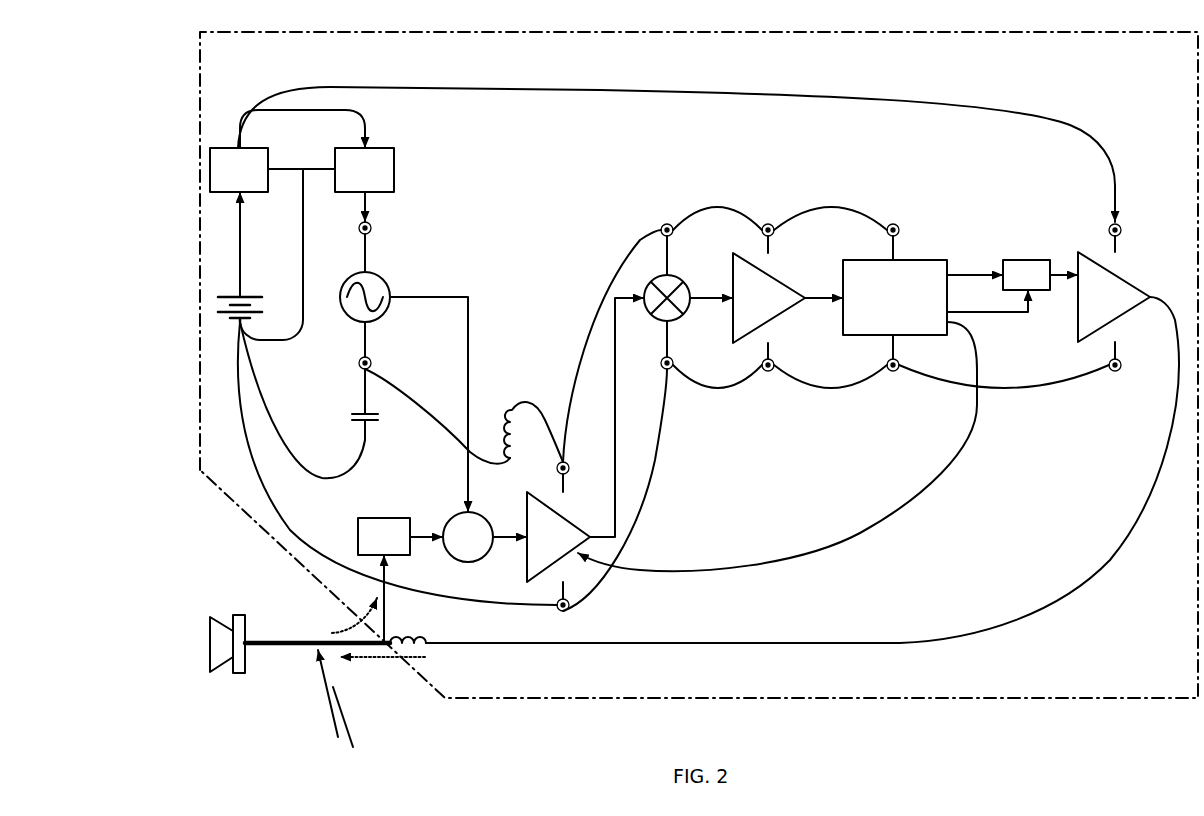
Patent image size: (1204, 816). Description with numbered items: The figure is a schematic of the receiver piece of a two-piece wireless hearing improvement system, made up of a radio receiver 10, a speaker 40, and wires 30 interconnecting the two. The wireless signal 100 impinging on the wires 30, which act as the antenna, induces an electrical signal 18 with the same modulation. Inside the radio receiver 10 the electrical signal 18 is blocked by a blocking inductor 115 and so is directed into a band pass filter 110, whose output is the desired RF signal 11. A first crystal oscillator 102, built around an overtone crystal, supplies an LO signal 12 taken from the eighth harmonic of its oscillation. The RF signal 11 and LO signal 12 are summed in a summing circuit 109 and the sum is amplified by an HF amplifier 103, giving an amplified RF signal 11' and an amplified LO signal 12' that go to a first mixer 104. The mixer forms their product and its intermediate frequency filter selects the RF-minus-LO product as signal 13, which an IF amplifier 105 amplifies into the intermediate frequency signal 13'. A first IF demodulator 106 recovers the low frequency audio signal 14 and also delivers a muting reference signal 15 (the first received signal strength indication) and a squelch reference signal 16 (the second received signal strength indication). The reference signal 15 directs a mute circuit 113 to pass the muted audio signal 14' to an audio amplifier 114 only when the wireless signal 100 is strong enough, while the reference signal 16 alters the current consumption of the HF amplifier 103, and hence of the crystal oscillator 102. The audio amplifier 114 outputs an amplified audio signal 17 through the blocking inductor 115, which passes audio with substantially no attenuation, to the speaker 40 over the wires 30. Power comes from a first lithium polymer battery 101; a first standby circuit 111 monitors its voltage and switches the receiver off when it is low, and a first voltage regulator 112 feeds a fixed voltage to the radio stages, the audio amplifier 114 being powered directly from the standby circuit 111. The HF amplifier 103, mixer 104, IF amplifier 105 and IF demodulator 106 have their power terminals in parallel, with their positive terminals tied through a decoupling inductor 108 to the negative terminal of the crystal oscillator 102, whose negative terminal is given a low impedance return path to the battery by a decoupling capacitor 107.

The radio receiver 10 is at (1090, 708).
The RF signal 11 is at (410, 482).
The amplified RF signal 11' is at (698, 417).
The LO signal 12 is at (437, 404).
The amplified LO signal 12' is at (709, 483).
The (RF-LO) frequency signal 13 is at (696, 199).
The intermediate frequency signal 13' is at (815, 213).
The audio signal 14 is at (982, 156).
The muted audio signal 14' is at (1073, 156).
The muting reference signal (RSSI 1) 15 is at (1018, 318).
The squelch reference signal (RSSI 2) 16 is at (917, 507).
The amplified audio signal 17 is at (377, 663).
The electrical signal 18 is at (348, 627).
The wires 30 is at (277, 652).
The speaker 40 is at (230, 673).
The wireless signal 100 is at (355, 730).
The first lithium polymer battery 101 is at (257, 322).
The first crystal oscillator 102 is at (385, 272).
The HF amplifier 103 is at (573, 563).
The first mixer 104 is at (648, 270).
The IF amplifier 105 is at (793, 313).
The first IF demodulator 106 is at (932, 252).
The decoupling capacitor 107 is at (375, 412).
The decoupling inductor 108 is at (510, 400).
The summing circuit 109 is at (470, 565).
The filter 110 is at (358, 533).
The first standby circuit 111 is at (228, 145).
The first voltage regulator 112 is at (400, 162).
The mute circuit 113 is at (1033, 250).
The audio amplifier 114 is at (1133, 273).
The blocking inductor 115 is at (428, 650).